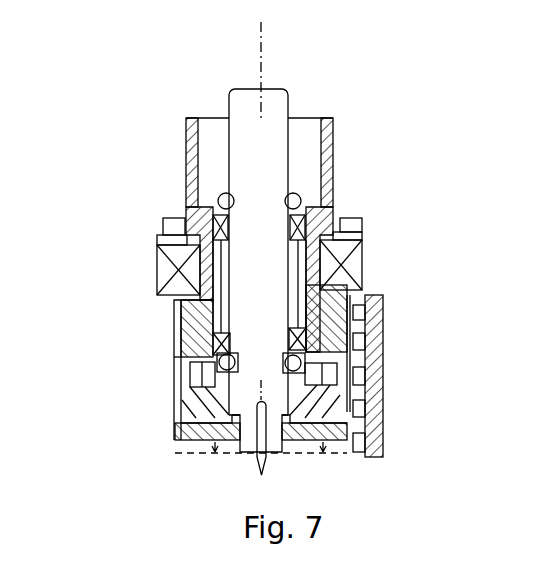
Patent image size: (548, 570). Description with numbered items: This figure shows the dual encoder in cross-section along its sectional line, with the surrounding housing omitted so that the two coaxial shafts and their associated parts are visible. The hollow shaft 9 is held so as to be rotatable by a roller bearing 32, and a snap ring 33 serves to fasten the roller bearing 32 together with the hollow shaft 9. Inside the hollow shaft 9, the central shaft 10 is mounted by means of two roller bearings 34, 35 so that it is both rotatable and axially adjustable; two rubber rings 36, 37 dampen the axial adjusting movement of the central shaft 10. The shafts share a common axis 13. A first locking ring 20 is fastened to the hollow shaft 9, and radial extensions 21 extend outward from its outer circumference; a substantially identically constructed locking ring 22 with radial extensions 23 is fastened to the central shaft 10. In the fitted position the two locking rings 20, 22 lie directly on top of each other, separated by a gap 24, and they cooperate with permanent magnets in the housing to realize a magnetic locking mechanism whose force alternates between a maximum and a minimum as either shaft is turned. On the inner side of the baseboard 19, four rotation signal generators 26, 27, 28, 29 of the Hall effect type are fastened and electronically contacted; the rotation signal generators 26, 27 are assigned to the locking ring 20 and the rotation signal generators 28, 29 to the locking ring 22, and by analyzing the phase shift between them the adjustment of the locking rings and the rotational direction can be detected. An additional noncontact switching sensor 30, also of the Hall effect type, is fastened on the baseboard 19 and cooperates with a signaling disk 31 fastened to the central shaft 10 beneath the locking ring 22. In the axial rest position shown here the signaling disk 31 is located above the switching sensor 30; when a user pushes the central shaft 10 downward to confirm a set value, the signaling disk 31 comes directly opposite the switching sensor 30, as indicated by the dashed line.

The hollow shaft 9 is at (333, 140).
The central shaft 10 is at (278, 108).
The axis of rotation 13 is at (261, 35).
The baseboard 19 is at (418, 380).
The first locking ring 20 is at (187, 371).
The radial extensions 21 is at (173, 320).
The locking ring 22 is at (190, 395).
The radial extensions 23 is at (173, 422).
The gap 24 is at (162, 366).
The rotation signal generator 26 is at (383, 315).
The rotation signal generator 27 is at (383, 345).
The rotation signal generator 28 is at (377, 375).
The rotation signal generator 29 is at (383, 408).
The switching sensor 30 is at (383, 445).
The signaling disk 31 is at (304, 432).
The roller bearing 32 is at (358, 265).
The snap ring 33 is at (175, 218).
The roller bearing 34 is at (345, 310).
The roller bearing 35 is at (305, 213).
The rubber ring 36 is at (298, 195).
The rubber ring 37 is at (172, 378).